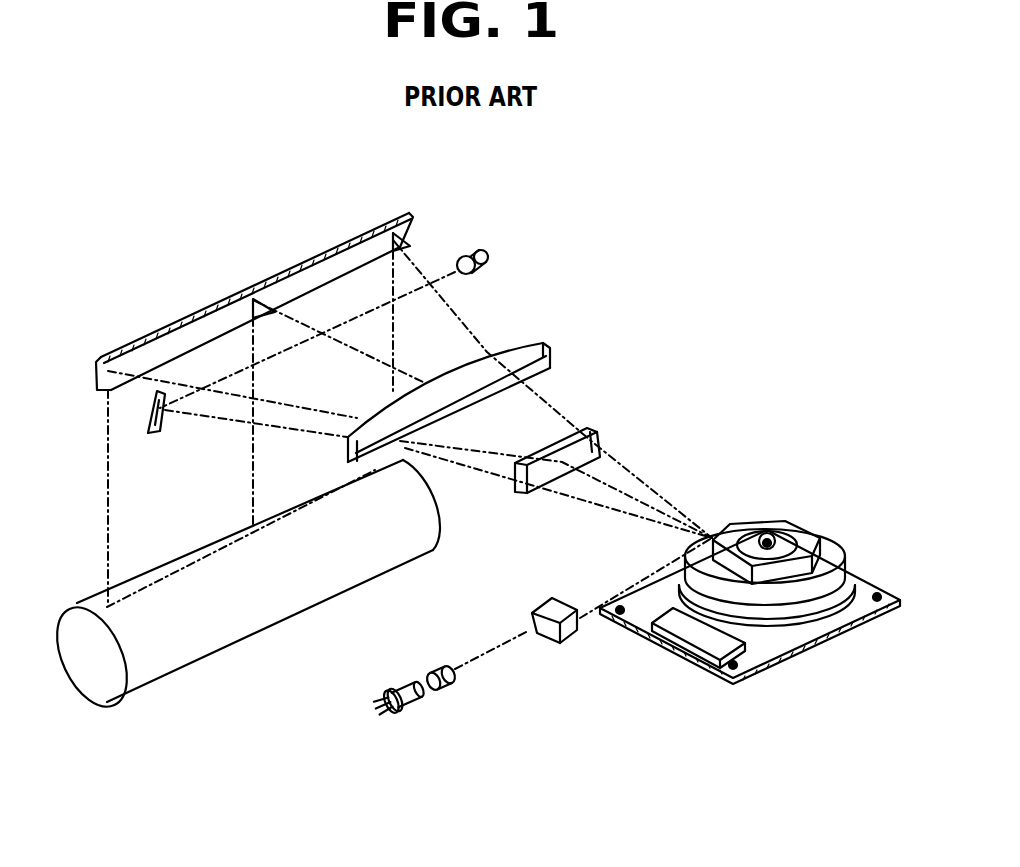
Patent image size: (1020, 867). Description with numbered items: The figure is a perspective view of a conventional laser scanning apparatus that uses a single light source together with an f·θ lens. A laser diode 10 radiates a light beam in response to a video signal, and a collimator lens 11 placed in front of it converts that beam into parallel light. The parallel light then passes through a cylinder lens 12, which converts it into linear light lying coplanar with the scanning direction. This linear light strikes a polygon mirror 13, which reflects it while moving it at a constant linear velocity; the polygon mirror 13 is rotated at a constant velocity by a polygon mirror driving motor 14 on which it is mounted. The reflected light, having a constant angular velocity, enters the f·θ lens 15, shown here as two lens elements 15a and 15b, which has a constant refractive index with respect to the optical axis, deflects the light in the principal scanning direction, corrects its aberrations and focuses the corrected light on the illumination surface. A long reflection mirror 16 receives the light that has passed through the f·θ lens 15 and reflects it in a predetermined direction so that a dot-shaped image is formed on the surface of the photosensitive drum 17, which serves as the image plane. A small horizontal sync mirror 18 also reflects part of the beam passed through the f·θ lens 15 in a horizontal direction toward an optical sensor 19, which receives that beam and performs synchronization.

The Laser Diode (LD) 10 is at (410, 713).
The collimator lens 11 is at (448, 690).
The cylinder lens 12 is at (572, 642).
The polygon mirror 13 is at (777, 523).
The polygon mirror driving motor 14 is at (830, 556).
The f·θ lens 15 is at (597, 428).
The first lens of f-theta lens unit 15a is at (600, 428).
The second lens of f-theta lens unit 15b is at (520, 345).
The reflection mirror 16 is at (193, 318).
The photosensitive drum 17 is at (189, 650).
The horizontal sync mirror 18 is at (148, 437).
The optical sensor 19 is at (478, 248).